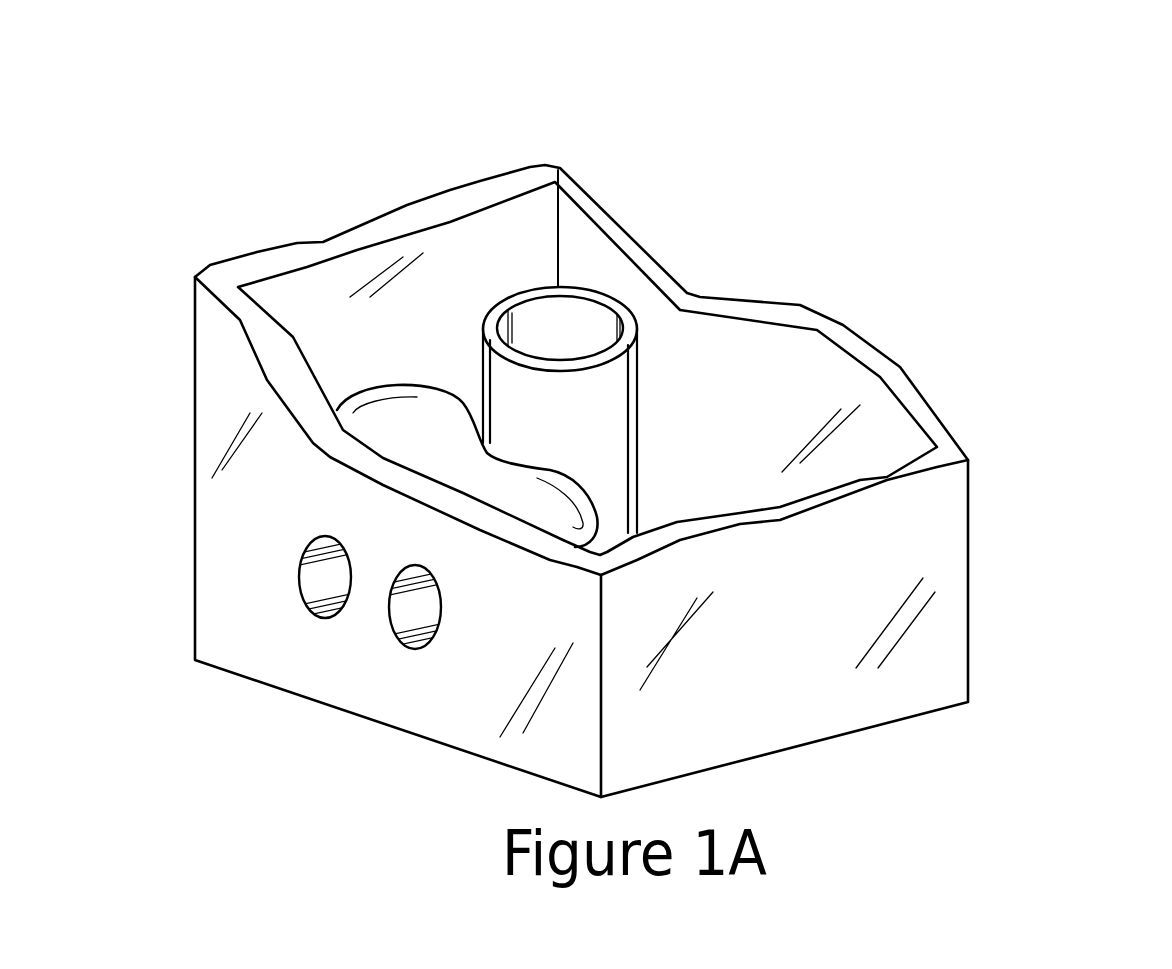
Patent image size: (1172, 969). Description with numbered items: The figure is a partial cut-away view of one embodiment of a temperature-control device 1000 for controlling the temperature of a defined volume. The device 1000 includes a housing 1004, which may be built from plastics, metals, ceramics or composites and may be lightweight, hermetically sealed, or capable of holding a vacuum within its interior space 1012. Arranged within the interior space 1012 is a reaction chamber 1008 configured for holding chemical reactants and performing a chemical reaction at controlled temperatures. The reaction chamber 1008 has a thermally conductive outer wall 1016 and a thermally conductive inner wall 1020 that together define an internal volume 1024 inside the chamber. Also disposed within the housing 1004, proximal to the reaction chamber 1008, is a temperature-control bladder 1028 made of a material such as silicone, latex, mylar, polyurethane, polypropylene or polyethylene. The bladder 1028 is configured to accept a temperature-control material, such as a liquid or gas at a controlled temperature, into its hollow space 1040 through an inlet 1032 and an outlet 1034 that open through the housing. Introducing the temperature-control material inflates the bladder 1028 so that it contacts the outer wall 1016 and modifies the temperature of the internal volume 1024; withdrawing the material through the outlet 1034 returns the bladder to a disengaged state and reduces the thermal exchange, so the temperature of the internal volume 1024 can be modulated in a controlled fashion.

The device 1000 is at (860, 150).
The housing 1004 is at (973, 582).
The reaction chamber 1008 is at (654, 450).
The interior space 1012 is at (760, 368).
The thermally conductive outer wall 1016 is at (638, 378).
The thermally conductive inner wall 1020 is at (526, 307).
The internal volume 1024 is at (594, 339).
The temperature-control bladder 1028 is at (392, 380).
The inlet 1032 is at (298, 573).
The outlet 1034 is at (437, 607).
The hollow space 1040 is at (459, 453).